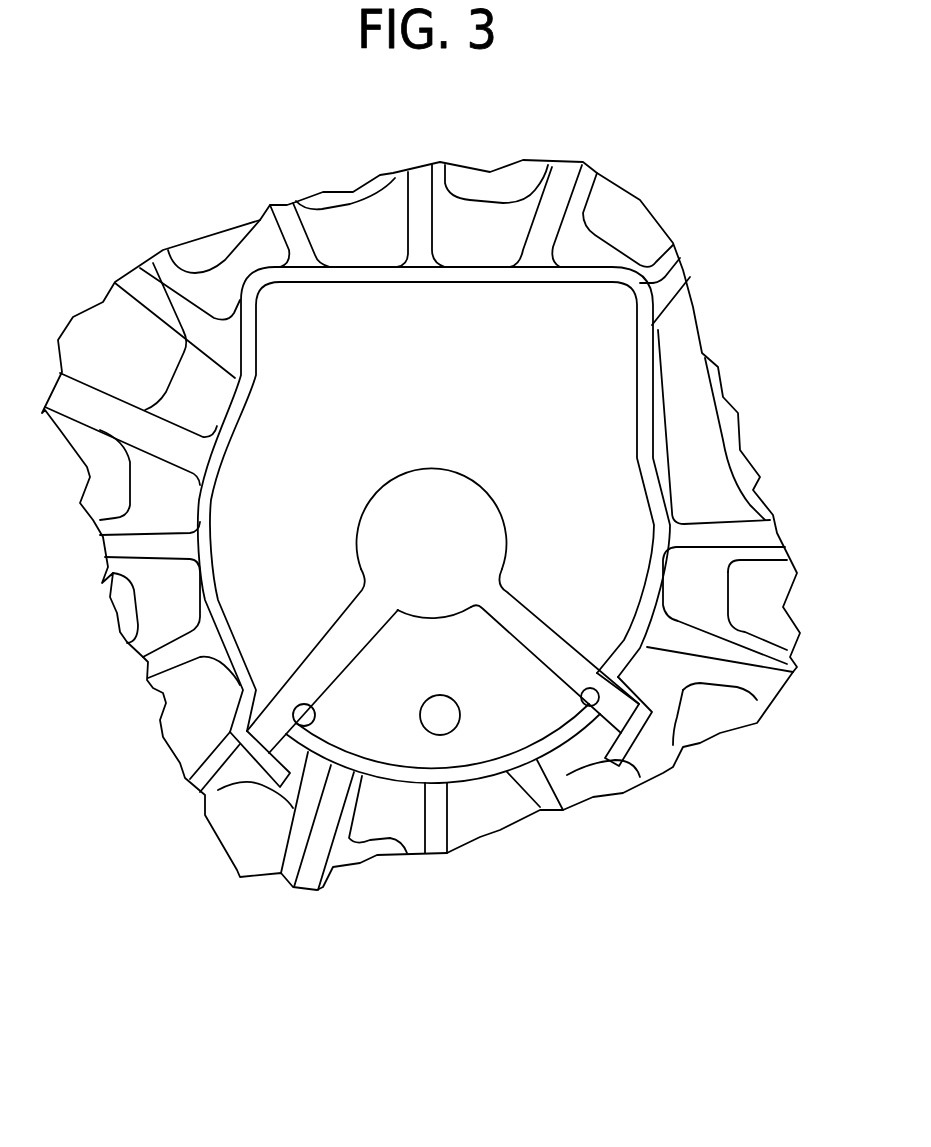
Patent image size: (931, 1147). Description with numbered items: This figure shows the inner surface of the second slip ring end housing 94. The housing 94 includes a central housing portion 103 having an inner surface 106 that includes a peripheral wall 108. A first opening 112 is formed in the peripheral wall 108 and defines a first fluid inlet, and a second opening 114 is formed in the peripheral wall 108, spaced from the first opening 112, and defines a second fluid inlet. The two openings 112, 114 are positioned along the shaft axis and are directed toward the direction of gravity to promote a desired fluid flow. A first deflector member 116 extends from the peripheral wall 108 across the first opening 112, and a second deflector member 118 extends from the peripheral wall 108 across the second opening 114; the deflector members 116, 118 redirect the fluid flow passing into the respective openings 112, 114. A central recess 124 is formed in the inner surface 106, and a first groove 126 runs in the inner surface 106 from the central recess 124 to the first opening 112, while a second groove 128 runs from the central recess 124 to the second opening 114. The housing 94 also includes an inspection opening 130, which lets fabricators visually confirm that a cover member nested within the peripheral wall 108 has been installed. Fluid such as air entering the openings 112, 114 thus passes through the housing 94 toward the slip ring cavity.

The second slip ring end housing 94 is at (655, 905).
The central housing portion 103 is at (462, 470).
The inner surface 106 is at (604, 425).
The peripheral wall 108 is at (461, 262).
The first opening 112 is at (315, 706).
The second opening 114 is at (580, 694).
The first deflector member 116 is at (226, 757).
The second deflector member 118 is at (647, 752).
The central recess 124 is at (395, 500).
The first groove 126 is at (325, 667).
The second groove 128 is at (541, 637).
The inspection opening 130 is at (432, 700).